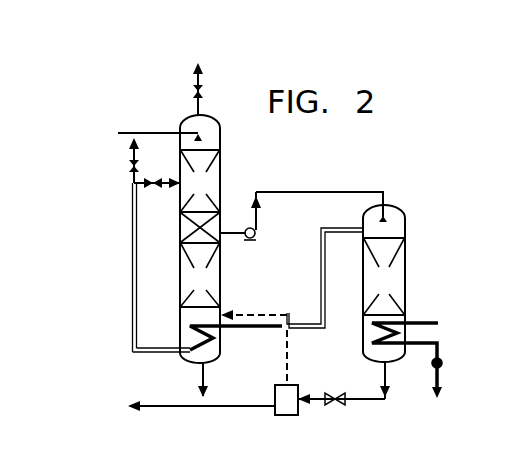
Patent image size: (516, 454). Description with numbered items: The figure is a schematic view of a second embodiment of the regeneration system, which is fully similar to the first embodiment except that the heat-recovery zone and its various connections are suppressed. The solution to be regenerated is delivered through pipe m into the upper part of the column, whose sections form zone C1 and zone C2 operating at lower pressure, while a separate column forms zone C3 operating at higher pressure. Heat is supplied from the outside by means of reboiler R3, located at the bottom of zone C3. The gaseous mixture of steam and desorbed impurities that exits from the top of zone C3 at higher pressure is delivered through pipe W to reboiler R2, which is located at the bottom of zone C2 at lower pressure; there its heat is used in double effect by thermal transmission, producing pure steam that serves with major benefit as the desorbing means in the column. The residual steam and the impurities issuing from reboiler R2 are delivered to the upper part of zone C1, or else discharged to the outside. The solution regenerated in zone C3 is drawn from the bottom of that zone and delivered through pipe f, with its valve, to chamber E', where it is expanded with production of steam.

The zone C1 is at (200, 181).
The zone C2 is at (200, 275).
The zone C3 is at (384, 283).
The reboiler R2 is at (208, 267).
The reboiler R3 is at (407, 347).
The pipe W is at (292, 278).
The pipe m is at (160, 126).
The pipe f is at (341, 392).
The chamber E' is at (280, 372).